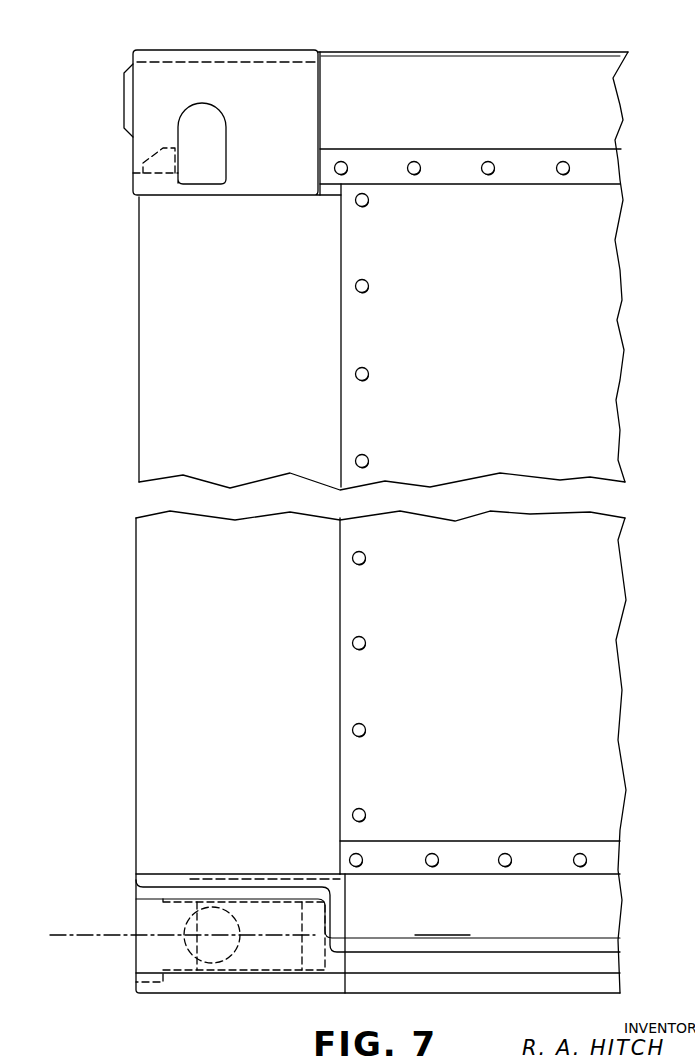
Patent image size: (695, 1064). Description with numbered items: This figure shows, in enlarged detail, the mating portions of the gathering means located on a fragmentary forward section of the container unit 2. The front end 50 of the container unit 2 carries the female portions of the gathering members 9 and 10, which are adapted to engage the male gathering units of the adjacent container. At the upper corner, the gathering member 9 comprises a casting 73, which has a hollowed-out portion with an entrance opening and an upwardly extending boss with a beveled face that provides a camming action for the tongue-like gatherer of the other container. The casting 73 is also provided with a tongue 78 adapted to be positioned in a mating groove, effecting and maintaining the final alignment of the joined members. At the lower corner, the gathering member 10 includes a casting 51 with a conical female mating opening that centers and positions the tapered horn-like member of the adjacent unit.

The container unit 2 is at (364, 49).
The female gathering member 9 is at (220, 47).
The female gathering member 10 is at (171, 986).
The front end 50 is at (139, 347).
The casting 51 is at (170, 885).
The casting 73 is at (287, 50).
The tongue 78 is at (123, 74).